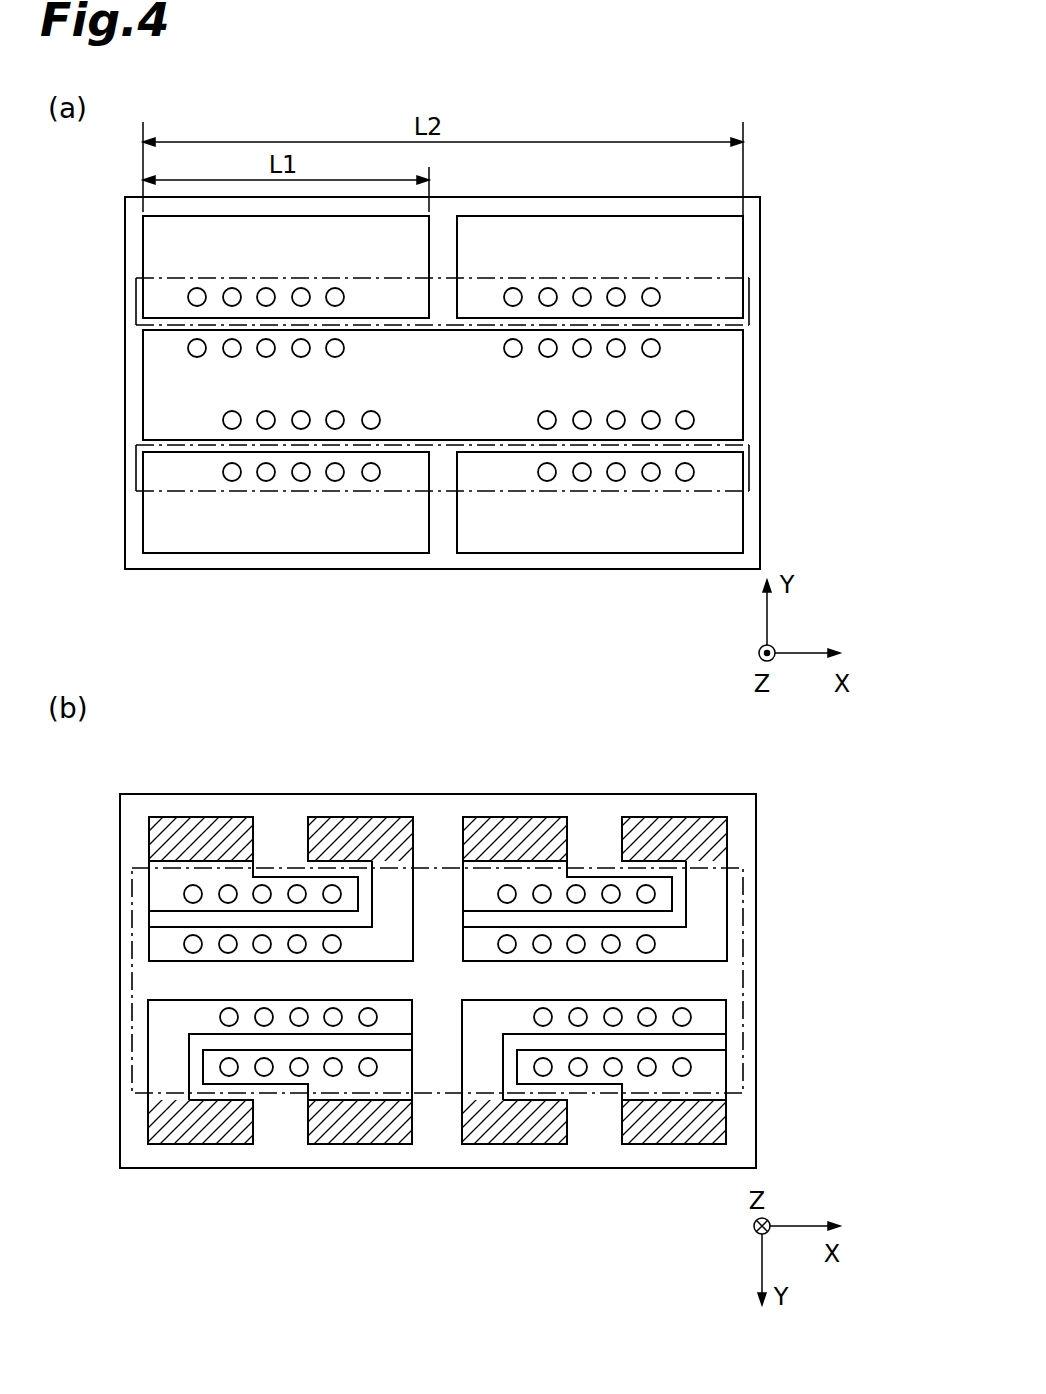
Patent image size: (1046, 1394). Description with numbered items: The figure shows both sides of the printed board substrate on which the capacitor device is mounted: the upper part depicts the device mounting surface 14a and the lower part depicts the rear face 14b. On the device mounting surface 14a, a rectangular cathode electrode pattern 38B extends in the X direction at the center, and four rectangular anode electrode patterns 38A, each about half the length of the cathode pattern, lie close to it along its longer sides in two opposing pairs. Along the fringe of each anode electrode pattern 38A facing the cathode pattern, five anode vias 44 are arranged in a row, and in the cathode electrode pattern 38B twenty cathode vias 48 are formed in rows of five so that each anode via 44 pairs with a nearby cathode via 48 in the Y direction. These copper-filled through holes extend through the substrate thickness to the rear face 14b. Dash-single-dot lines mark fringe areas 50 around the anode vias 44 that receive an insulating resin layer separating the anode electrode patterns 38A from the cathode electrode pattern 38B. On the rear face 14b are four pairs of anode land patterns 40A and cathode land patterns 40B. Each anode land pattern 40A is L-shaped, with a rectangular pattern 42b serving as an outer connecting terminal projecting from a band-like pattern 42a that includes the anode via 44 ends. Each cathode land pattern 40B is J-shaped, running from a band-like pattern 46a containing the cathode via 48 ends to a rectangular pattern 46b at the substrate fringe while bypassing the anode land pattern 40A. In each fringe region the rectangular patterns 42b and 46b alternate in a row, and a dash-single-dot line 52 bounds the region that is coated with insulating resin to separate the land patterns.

The device mounting surface 14a is at (750, 212).
The rear face 14b is at (745, 810).
The anode electrode pattern 38A is at (155, 236).
The cathode electrode pattern 38B is at (727, 385).
The anode via 44 is at (335, 288).
The cathode via 48 is at (439, 682).
The fringe area 50 is at (752, 300).
The boundary region 52 is at (745, 884).
The anode land pattern 40A is at (166, 808).
The cathode land pattern 40B is at (330, 808).
The band-like pattern 42a is at (275, 900).
The rectangular pattern 42b is at (228, 822).
The band-like pattern 46a is at (160, 948).
The rectangular pattern 46b is at (389, 825).